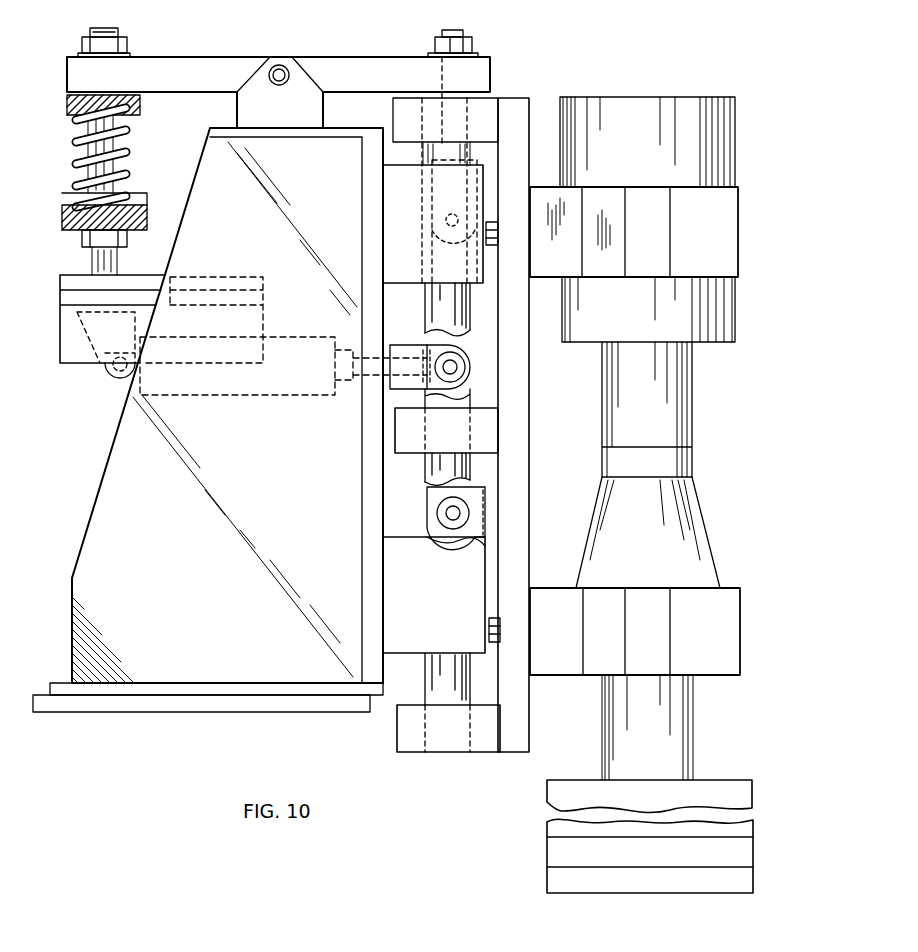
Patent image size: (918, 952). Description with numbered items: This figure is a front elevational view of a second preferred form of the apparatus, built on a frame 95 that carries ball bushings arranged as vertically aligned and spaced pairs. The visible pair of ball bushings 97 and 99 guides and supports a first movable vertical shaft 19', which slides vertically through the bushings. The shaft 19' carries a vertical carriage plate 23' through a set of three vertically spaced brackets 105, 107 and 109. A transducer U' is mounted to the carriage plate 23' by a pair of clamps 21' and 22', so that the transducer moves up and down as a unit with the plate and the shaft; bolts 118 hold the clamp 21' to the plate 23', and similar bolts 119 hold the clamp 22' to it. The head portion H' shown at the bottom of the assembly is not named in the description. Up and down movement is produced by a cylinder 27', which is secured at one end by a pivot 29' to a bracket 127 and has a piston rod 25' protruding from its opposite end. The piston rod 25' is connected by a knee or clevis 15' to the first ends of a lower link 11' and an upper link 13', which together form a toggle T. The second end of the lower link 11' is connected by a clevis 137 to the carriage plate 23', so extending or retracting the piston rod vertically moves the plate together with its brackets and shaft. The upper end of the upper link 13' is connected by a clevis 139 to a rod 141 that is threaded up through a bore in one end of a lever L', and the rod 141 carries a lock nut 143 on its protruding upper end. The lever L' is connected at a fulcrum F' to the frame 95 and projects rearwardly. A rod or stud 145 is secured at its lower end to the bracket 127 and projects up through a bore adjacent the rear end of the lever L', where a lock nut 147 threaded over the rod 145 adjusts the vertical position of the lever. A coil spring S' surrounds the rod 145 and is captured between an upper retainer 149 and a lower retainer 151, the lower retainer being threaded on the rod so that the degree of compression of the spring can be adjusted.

The rod or stud 145 is at (112, 28).
The lock nut 147 is at (129, 46).
The upper retainer 149 is at (141, 108).
The coil spring S' is at (121, 157).
The lower retainer 151 is at (142, 196).
The bracket 127 is at (62, 355).
The pivot 29' is at (103, 390).
The cylinder 27' is at (283, 360).
The piston rod 25' is at (378, 346).
The frame 95 is at (203, 596).
The lever L' is at (278, 92).
The fulcrum F' is at (280, 52).
The rod 141 is at (462, 29).
The lock nut 143 is at (474, 46).
The bracket 105 is at (490, 106).
The clevis 139 is at (477, 160).
The ball bushing 97 is at (413, 204).
The bolts 118 is at (485, 230).
The first movable vertical shaft 19' is at (446, 487).
The toggle T is at (421, 312).
The upper link 13' is at (497, 376).
The knee or clevis 15' is at (502, 372).
The bracket 107 is at (486, 430).
The lower link 11' is at (522, 457).
The vertical carriage plate 23' is at (536, 425).
The clevis 137 is at (453, 517).
The ball bushing 99 is at (414, 604).
The bolts 119 is at (489, 628).
The bracket 109 is at (397, 732).
The clamp 21' is at (634, 187).
The transducer U' is at (664, 432).
The clamp 22' is at (635, 631).
The hammer head H' is at (674, 784).